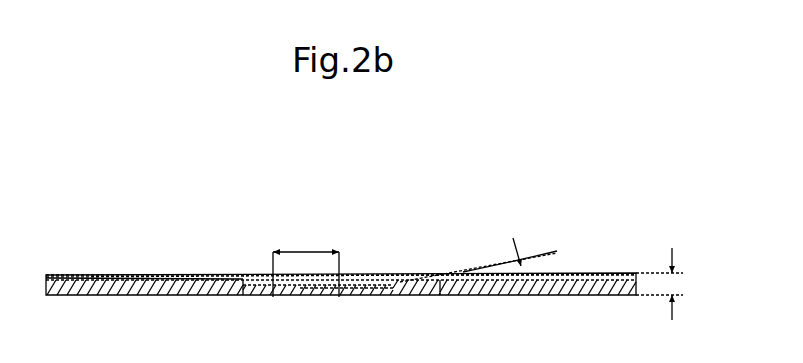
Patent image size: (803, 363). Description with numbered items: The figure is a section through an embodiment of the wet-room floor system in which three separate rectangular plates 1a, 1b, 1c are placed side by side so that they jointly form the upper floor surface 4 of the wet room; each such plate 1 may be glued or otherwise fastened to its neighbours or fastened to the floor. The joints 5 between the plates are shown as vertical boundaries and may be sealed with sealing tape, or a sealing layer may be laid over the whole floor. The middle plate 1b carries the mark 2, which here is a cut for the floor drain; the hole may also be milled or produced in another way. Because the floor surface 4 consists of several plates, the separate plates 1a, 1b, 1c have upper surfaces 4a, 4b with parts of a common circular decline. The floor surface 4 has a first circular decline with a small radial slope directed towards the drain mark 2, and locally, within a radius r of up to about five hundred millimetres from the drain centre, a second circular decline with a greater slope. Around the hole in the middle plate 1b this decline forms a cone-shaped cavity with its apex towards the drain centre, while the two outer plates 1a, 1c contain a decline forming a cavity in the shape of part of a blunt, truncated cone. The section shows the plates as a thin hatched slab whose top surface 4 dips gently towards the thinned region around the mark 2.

The plate 1 is at (550, 138).
The first outer plate 1a is at (145, 296).
The middle plate 1b is at (393, 296).
The second outer plate 1c is at (548, 296).
The mark for floor drain 2 is at (307, 292).
The floor surface 4 is at (341, 246).
The upper surface of first outer plate 4a is at (117, 274).
The upper surface of middle plate 4b is at (375, 288).
The joint 5 is at (245, 296).
The radius r is at (306, 260).